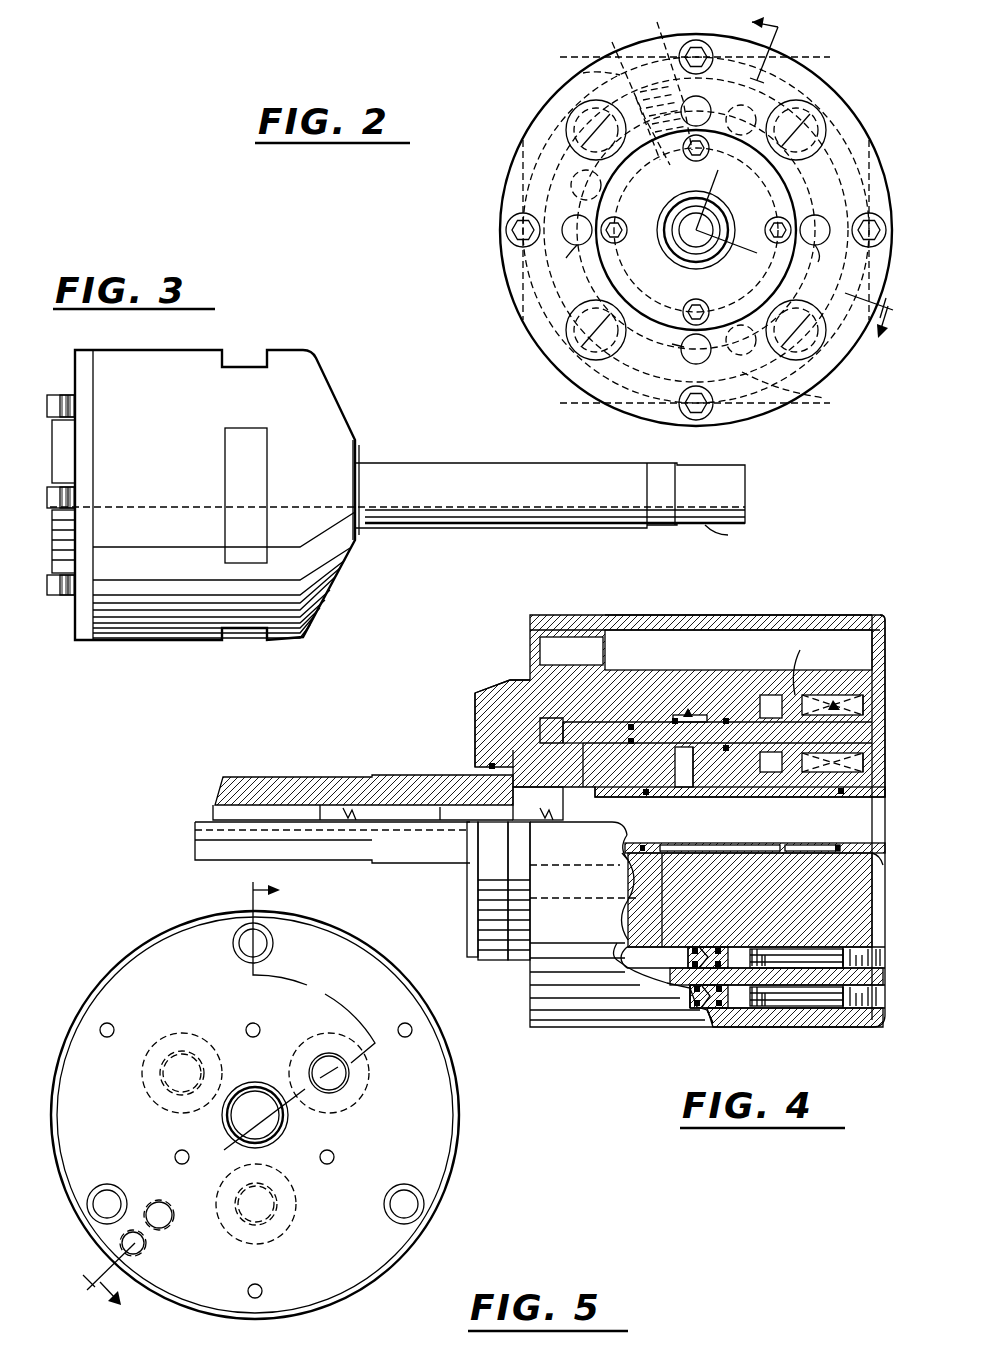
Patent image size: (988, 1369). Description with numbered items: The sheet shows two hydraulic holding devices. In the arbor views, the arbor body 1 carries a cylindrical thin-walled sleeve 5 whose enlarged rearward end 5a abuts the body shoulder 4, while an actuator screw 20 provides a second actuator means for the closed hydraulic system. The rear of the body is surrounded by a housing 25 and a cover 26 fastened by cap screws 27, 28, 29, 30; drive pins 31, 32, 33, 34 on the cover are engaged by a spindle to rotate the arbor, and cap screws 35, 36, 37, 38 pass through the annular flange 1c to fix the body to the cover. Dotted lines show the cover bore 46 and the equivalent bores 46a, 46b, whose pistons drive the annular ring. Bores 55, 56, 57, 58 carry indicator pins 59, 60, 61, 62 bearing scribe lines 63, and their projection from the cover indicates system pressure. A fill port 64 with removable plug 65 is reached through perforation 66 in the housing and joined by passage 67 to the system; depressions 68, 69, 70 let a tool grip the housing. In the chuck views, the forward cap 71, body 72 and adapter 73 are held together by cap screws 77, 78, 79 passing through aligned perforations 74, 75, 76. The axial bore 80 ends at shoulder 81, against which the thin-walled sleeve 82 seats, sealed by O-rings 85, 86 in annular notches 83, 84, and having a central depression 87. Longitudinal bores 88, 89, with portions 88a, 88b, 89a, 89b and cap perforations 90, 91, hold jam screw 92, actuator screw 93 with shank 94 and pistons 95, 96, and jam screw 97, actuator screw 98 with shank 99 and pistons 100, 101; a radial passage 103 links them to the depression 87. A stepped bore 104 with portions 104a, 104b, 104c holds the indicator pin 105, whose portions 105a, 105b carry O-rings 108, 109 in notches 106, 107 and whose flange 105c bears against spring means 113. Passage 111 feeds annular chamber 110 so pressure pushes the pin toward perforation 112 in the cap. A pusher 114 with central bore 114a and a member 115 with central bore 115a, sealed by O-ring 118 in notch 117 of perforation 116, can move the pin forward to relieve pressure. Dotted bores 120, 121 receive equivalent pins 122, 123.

In FIG. 2, the arbor body 1 is at (794, 187).
In FIG. 3, the arbor body 1 is at (718, 537).
In FIG. 2, the annular flange 1c is at (608, 283).
In FIG. 3, the annular flange 1c is at (55, 460).
In FIG. 5, the body shoulder 4 is at (186, 1101).
In FIG. 3, the cylindrical thin-walled sleeve 5 is at (460, 470).
In FIG. 3, the enlarged rearward end 5a is at (366, 462).
In FIG. 2, the actuator screw 20 is at (689, 247).
In FIG. 3, the housing 25 is at (330, 398).
In FIG. 2, the cover 26 is at (585, 86).
In FIG. 2, the cap screw 27 is at (696, 42).
In FIG. 2, the cap screw 28 is at (508, 236).
In FIG. 2, the cap screw 29 is at (705, 415).
In FIG. 2, the cap screw 30 is at (878, 236).
In FIG. 2, the drive pin 31 is at (568, 125).
In FIG. 2, the drive pin 32 is at (575, 342).
In FIG. 2, the drive pin 33 is at (812, 352).
In FIG. 2, the drive pin 34 is at (822, 135).
In FIG. 2, the cap screw 35 is at (703, 153).
In FIG. 2, the cap screw 36 is at (616, 242).
In FIG. 2, the cap screw 37 is at (709, 312).
In FIG. 2, the cap screw 38 is at (780, 220).
In FIG. 2, the bore 46 is at (810, 72).
In FIG. 2, the bore 46a is at (572, 182).
In FIG. 2, the bore 46b is at (790, 367).
In FIG. 2, the bore 55 is at (737, 111).
In FIG. 2, the bore 56 is at (570, 223).
In FIG. 2, the bore 57 is at (686, 358).
In FIG. 2, the bore 58 is at (822, 260).
In FIG. 2, the indicator pin 59 is at (690, 104).
In FIG. 3, the indicator pin 59 is at (46, 405).
In FIG. 2, the indicator pin 60 is at (566, 260).
In FIG. 2, the indicator pin 61 is at (668, 344).
In FIG. 3, the indicator pin 61 is at (46, 590).
In FIG. 2, the indicator pin 62 is at (815, 215).
In FIG. 3, the indicator pin 62 is at (46, 500).
In FIG. 3, the annular scribe lines 63 is at (70, 410).
In FIG. 2, the fill port 64 is at (666, 79).
In FIG. 2, the removable plug 65 is at (628, 55).
In FIG. 2, the perforation 66 is at (582, 74).
In FIG. 2, the passage 67 is at (656, 132).
In FIG. 3, the external depression 68 is at (230, 362).
In FIG. 3, the external depression 69 is at (224, 495).
In FIG. 3, the external depression 70 is at (235, 635).
In FIG. 4, the forward cap 71 is at (880, 614).
In FIG. 5, the forward cap 71 is at (457, 1142).
In FIG. 4, the body 72 is at (640, 618).
In FIG. 4, the adapter 73 is at (494, 688).
In FIG. 4, the aligned perforation 74 is at (878, 636).
In FIG. 4, the aligned perforation 75 is at (738, 625).
In FIG. 4, the aligned perforation 76 is at (542, 650).
In FIG. 5, the cap screw 77 is at (233, 941).
In FIG. 5, the cap screw 78 is at (104, 1204).
In FIG. 5, the cap screw 79 is at (408, 1204).
In FIG. 4, the axial bore 80 is at (728, 855).
In FIG. 4, the shoulder 81 is at (575, 812).
In FIG. 4, the thin-walled sleeve 82 is at (678, 790).
In FIG. 5, the thin-walled sleeve 82 is at (288, 1127).
In FIG. 4, the annular notch 83 is at (640, 852).
In FIG. 4, the annular notch 84 is at (840, 848).
In FIG. 4, the O-ring 85 is at (634, 852).
In FIG. 4, the O-ring 86 is at (875, 857).
In FIG. 4, the central elongated depression 87 is at (728, 798).
In FIG. 4, the longitudinally extending bore 88 is at (788, 945).
In FIG. 4, the first bore portion 88a is at (843, 946).
In FIG. 4, the second bore portion 88b is at (688, 946).
In FIG. 4, the longitudinally extending bore 89 is at (780, 1008).
In FIG. 4, the large-diameter portion 89a is at (830, 1010).
In FIG. 4, the lesser-diameter portion 89b is at (732, 1009).
In FIG. 4, the perforation 90 is at (872, 950).
In FIG. 4, the perforation 91 is at (878, 1015).
In FIG. 4, the jam screw 92 is at (758, 948).
In FIG. 4, the actuator screw 93 is at (878, 950).
In FIG. 4, the shank 94 is at (798, 960).
In FIG. 4, the piston 95 is at (720, 946).
In FIG. 4, the piston 96 is at (693, 948).
In FIG. 4, the jam screw 97 is at (760, 1010).
In FIG. 4, the actuator screw 98 is at (878, 990).
In FIG. 4, the shank 99 is at (810, 1008).
In FIG. 4, the piston 100 is at (710, 1018).
In FIG. 4, the piston 101 is at (693, 1000).
In FIG. 4, the radially extending passage 103 is at (660, 888).
In FIG. 4, the longitudinal bore 104 is at (690, 710).
In FIG. 5, the longitudinal bore 104 is at (372, 1070).
In FIG. 4, the first bore portion 104a is at (833, 698).
In FIG. 4, the second bore portion 104b is at (762, 696).
In FIG. 4, the third bore portion 104c is at (605, 720).
In FIG. 4, the indicator pin 105 is at (875, 735).
In FIG. 5, the indicator pin 105 is at (340, 1082).
In FIG. 4, the first pin portion 105a is at (812, 760).
In FIG. 4, the second pin portion 105b is at (598, 732).
In FIG. 4, the annular flange 105c is at (808, 663).
In FIG. 4, the annular notch 106 is at (729, 723).
In FIG. 4, the annular notch 107 is at (633, 728).
In FIG. 4, the O-ring 108 is at (727, 748).
In FIG. 4, the O-ring 109 is at (632, 745).
In FIG. 4, the annular chamber 110 is at (674, 716).
In FIG. 4, the passage 111 is at (695, 770).
In FIG. 4, the perforation 112 is at (876, 708).
In FIG. 4, the spring means 113 is at (865, 695).
In FIG. 4, the pusher 114 is at (488, 700).
In FIG. 4, the central bore 114a is at (538, 803).
In FIG. 4, the member 115 is at (330, 780).
In FIG. 4, the central bore 115a is at (272, 805).
In FIG. 4, the central perforation 116 is at (545, 730).
In FIG. 4, the annular notch 117 is at (520, 760).
In FIG. 4, the O-ring 118 is at (488, 765).
In FIG. 5, the bore 120 is at (190, 1035).
In FIG. 5, the bore 121 is at (285, 1235).
In FIG. 5, the pin 122 is at (158, 1090).
In FIG. 5, the pin 123 is at (280, 1202).